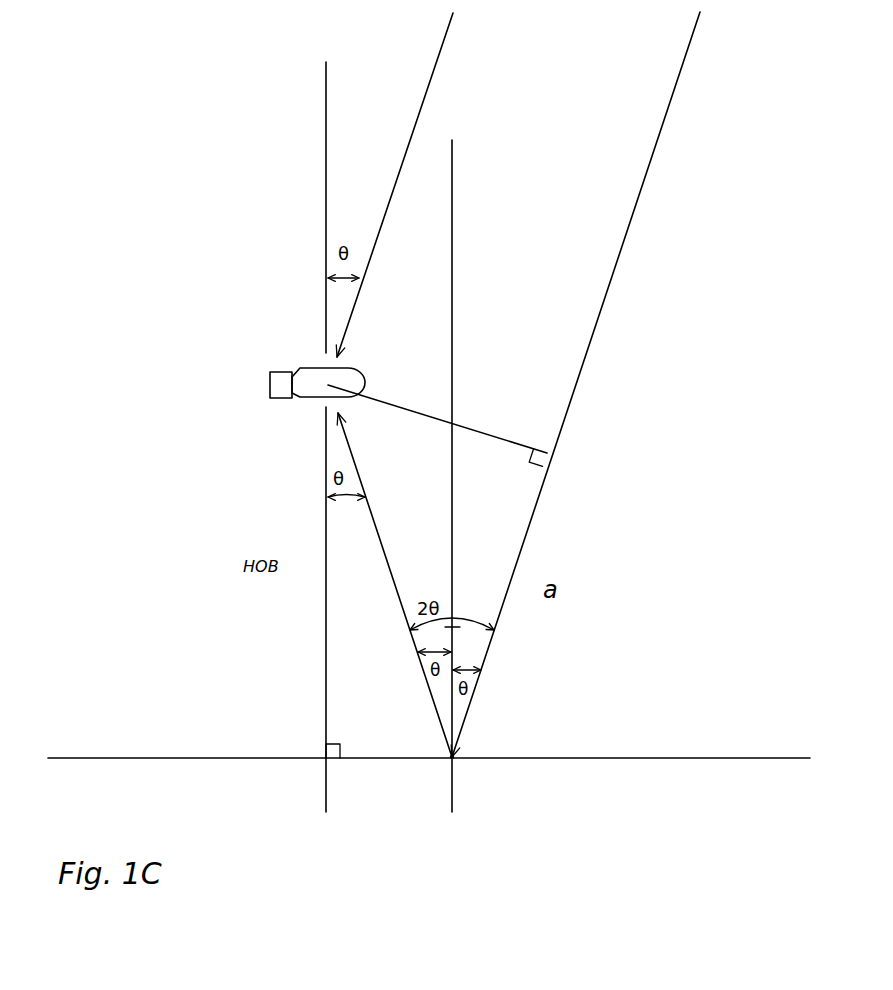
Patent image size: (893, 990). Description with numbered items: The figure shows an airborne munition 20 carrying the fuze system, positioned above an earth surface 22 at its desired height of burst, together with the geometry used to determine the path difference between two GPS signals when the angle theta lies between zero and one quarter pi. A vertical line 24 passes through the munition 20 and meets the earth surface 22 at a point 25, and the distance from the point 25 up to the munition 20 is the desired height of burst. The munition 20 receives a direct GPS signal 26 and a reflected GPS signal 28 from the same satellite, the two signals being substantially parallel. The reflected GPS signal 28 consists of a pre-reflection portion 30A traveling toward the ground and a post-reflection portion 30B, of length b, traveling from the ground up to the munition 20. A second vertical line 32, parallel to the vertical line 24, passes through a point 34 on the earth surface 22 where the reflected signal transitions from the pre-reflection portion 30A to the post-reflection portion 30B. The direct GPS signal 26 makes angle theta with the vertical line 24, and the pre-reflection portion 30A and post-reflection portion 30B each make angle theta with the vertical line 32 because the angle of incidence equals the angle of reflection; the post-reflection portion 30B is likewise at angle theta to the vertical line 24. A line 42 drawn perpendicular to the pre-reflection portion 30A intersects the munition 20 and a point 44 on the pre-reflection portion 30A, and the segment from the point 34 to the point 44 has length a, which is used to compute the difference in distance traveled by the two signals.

The munition 20 is at (270, 362).
The earth surface 22 is at (95, 752).
The vertical line 24 is at (326, 100).
The point 25 is at (322, 762).
The direct GPS signal 26 is at (443, 30).
The reflected GPS signal 28 is at (620, 126).
The pre-reflection portion 30A is at (614, 299).
The post-reflection portion 30B is at (422, 688).
The vertical line 32 is at (458, 190).
The point 34 is at (456, 762).
The line 42 is at (520, 437).
The point 44 is at (553, 453).